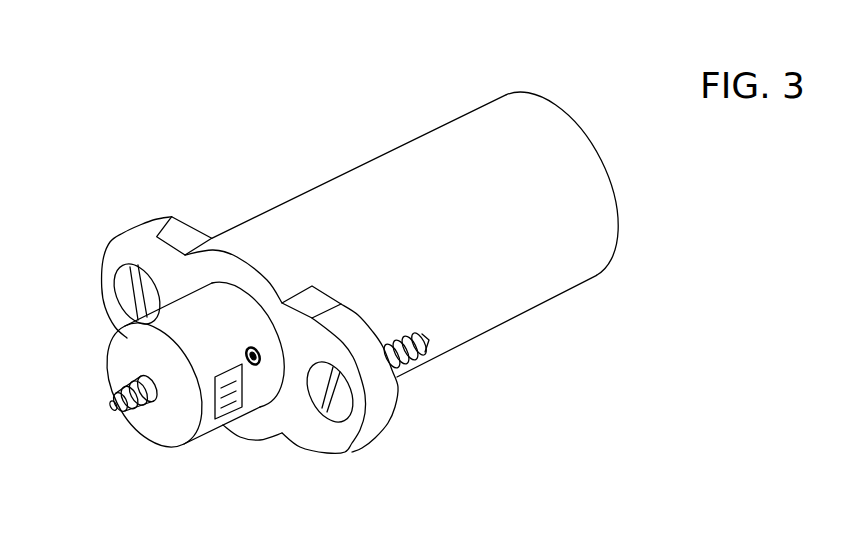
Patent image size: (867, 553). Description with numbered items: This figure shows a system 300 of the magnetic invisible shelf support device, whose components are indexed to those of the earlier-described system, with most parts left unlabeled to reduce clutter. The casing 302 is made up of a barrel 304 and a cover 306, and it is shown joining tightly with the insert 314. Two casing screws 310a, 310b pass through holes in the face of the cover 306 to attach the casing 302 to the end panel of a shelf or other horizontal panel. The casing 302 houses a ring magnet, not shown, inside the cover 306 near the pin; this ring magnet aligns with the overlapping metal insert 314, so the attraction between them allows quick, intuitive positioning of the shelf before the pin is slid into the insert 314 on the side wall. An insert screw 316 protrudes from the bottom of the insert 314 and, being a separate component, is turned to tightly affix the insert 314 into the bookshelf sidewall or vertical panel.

The system 300 is at (302, 115).
The casing 302 is at (469, 96).
The barrel 304 is at (613, 188).
The cover 306 is at (187, 233).
The casing screw 310a is at (122, 288).
The casing screw 310b is at (343, 408).
The insert 314 is at (200, 437).
The insert screw 316 is at (120, 413).